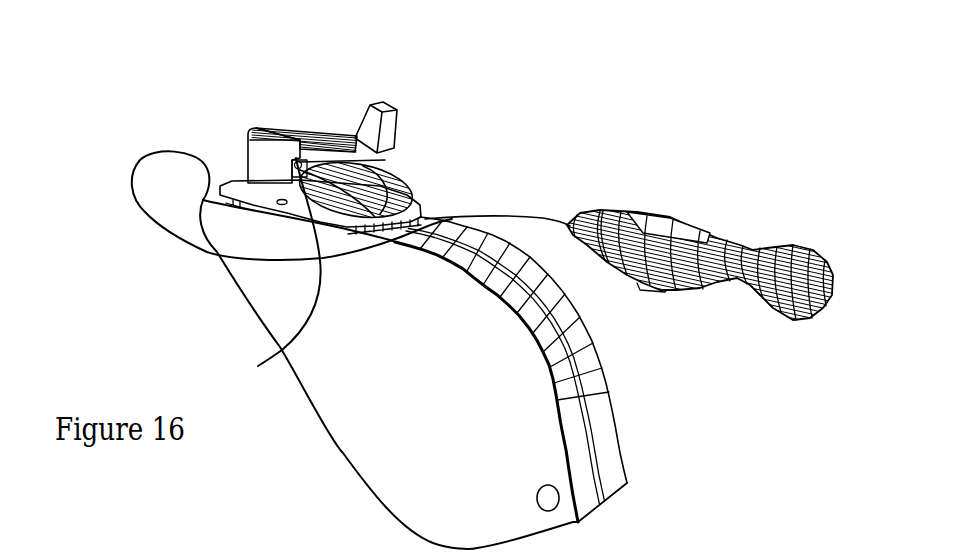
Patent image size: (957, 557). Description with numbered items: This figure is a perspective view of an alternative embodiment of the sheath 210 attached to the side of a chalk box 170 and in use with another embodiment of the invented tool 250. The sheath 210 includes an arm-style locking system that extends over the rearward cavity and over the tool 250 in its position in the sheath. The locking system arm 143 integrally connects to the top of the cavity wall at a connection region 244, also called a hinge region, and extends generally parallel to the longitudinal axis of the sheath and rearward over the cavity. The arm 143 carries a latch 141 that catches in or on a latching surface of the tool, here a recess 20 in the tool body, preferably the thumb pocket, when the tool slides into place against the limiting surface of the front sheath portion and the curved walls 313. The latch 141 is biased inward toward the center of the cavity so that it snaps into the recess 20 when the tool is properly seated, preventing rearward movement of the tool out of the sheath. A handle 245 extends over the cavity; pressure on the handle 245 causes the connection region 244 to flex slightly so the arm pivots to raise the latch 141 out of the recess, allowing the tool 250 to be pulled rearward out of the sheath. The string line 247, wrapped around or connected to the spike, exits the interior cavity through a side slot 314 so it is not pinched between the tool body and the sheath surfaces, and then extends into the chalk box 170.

The recess 20 is at (648, 228).
The latch 141 is at (388, 153).
The locking system arm 143 is at (336, 119).
The chalk box 170 is at (633, 393).
The sheath 210 is at (306, 94).
The connection region 244 is at (297, 128).
The handle 245 is at (385, 105).
The string line 247 is at (147, 217).
The tool 250 is at (716, 184).
The curved walls 313 is at (396, 165).
The side slot 314 is at (258, 366).